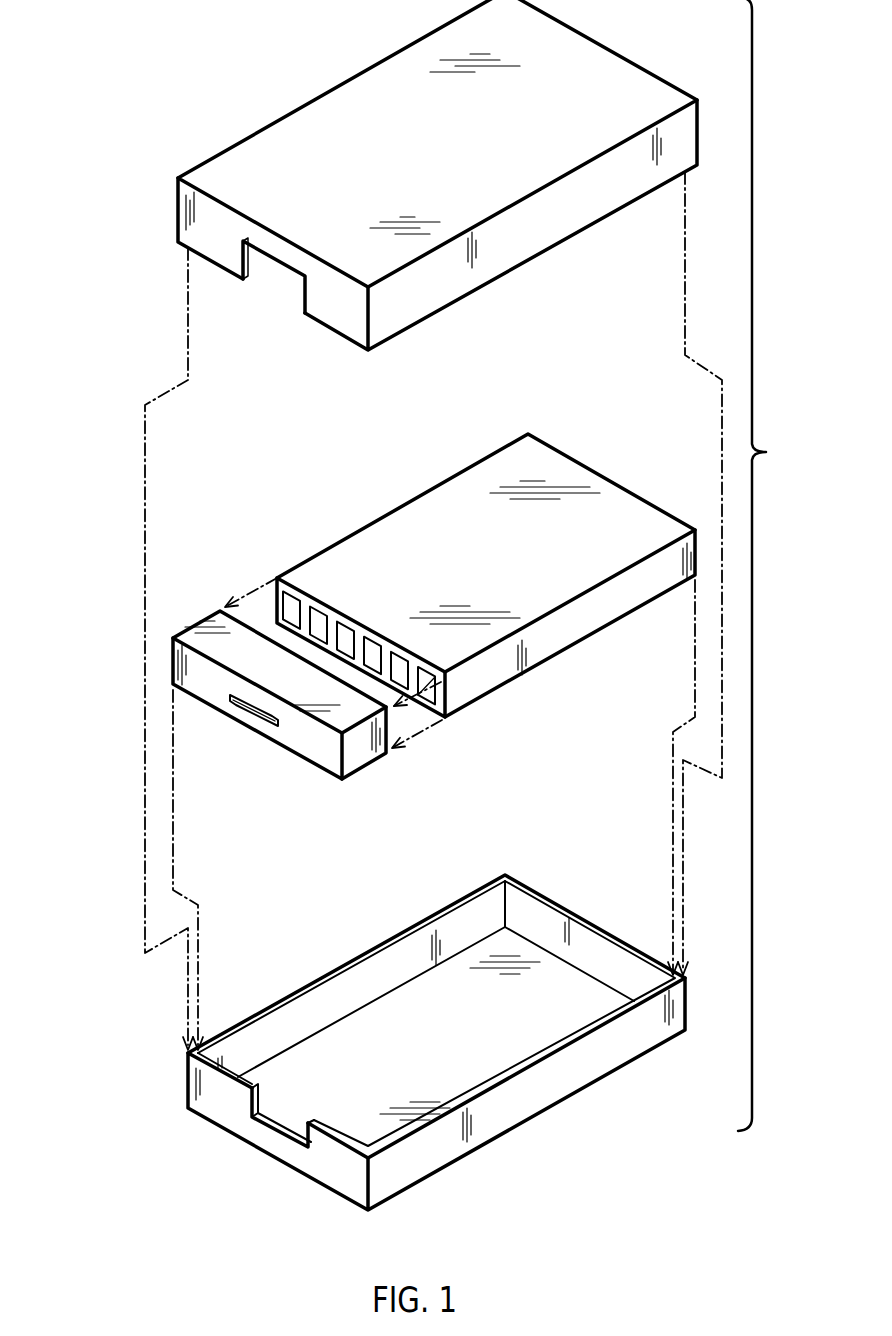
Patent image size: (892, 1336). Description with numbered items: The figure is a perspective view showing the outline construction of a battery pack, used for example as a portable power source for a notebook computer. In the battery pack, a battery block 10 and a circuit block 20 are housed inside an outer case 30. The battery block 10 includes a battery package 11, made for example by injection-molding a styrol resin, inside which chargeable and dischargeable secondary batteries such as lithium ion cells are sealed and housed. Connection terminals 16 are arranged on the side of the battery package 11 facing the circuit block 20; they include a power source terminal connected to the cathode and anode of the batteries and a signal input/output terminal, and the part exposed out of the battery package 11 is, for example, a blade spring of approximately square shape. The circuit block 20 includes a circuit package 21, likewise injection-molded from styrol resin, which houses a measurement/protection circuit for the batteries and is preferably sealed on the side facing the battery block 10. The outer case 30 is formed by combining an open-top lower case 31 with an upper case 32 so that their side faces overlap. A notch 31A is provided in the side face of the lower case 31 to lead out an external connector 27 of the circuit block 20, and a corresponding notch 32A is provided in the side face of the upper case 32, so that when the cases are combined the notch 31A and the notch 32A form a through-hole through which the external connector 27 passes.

The battery block 10 is at (476, 611).
The battery package 11 is at (600, 615).
The connection terminals 16 is at (432, 693).
The circuit block 20 is at (221, 663).
The circuit package 21 is at (358, 752).
The external connector 27 is at (238, 712).
The outer case 30 is at (474, 565).
The lower case 31 is at (405, 1042).
The notch 31A is at (307, 1131).
The upper case 32 is at (404, 175).
The notch 32A is at (300, 288).